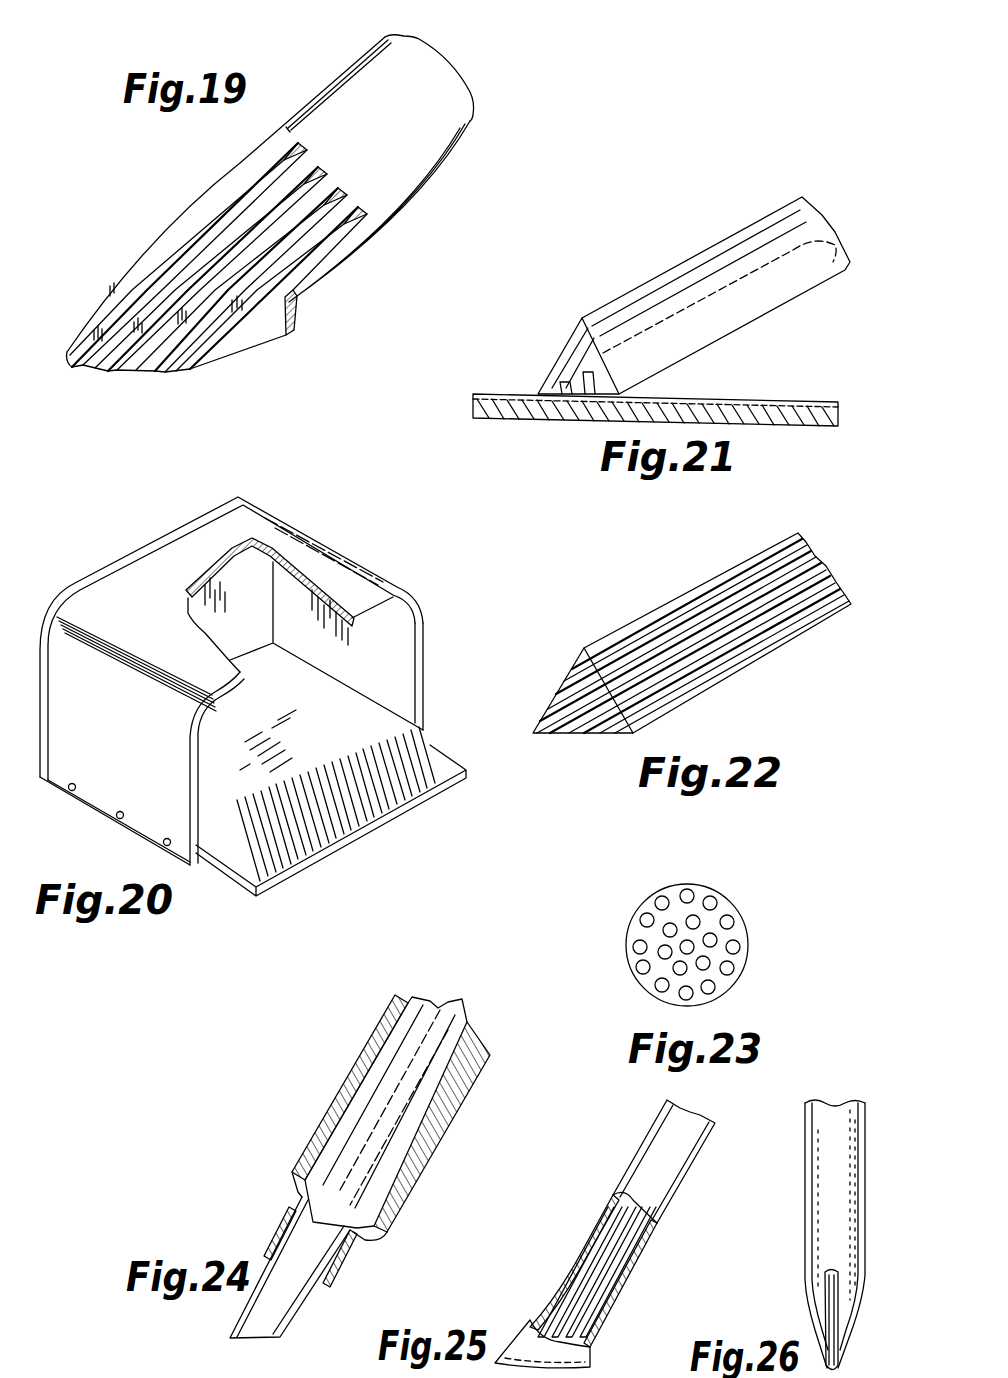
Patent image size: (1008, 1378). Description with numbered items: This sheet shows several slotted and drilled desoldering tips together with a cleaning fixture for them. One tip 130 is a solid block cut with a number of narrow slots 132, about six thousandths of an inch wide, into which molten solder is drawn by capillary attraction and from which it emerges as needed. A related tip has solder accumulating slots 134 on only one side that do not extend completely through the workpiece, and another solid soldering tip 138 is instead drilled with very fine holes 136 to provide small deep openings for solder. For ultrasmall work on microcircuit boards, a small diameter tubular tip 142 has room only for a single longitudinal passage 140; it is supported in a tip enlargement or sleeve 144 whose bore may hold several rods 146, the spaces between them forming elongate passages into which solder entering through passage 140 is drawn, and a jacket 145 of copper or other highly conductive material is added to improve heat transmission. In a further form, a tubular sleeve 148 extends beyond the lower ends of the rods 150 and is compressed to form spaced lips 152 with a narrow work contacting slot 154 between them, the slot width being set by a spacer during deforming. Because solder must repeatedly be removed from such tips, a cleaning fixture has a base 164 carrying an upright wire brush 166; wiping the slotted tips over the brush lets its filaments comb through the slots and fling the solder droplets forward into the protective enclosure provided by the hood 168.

In FIG. 19, the tip 130 is at (425, 147).
In FIG. 19, the narrow slots 132 is at (355, 203).
In FIG. 21, the slots 134 is at (833, 262).
In FIG. 22, the slots 134 is at (567, 735).
In FIG. 23, the fine holes 136 is at (728, 920).
In FIG. 23, the solid soldering tip 138 is at (738, 962).
In FIG. 24, the longitudinal passage 140 is at (262, 1335).
In FIG. 24, the tubular tip 142 is at (307, 1303).
In FIG. 24, the tip enlargement or sleeve 144 is at (412, 998).
In FIG. 24, the jacket 145 is at (383, 1017).
In FIG. 24, the rods 146 is at (461, 999).
In FIG. 25, the tubular sleeve 148 is at (653, 1138).
In FIG. 26, the tubular sleeve 148 is at (813, 1140).
In FIG. 25, the rods 150 is at (600, 1232).
In FIG. 25, the spaced lips 152 is at (513, 1340).
In FIG. 26, the spaced lips 152 is at (835, 1307).
In FIG. 26, the slot 154 is at (830, 1275).
In FIG. 20, the base 164 is at (386, 806).
In FIG. 20, the upright wire brush 166 is at (427, 720).
In FIG. 20, the hood 168 is at (158, 563).